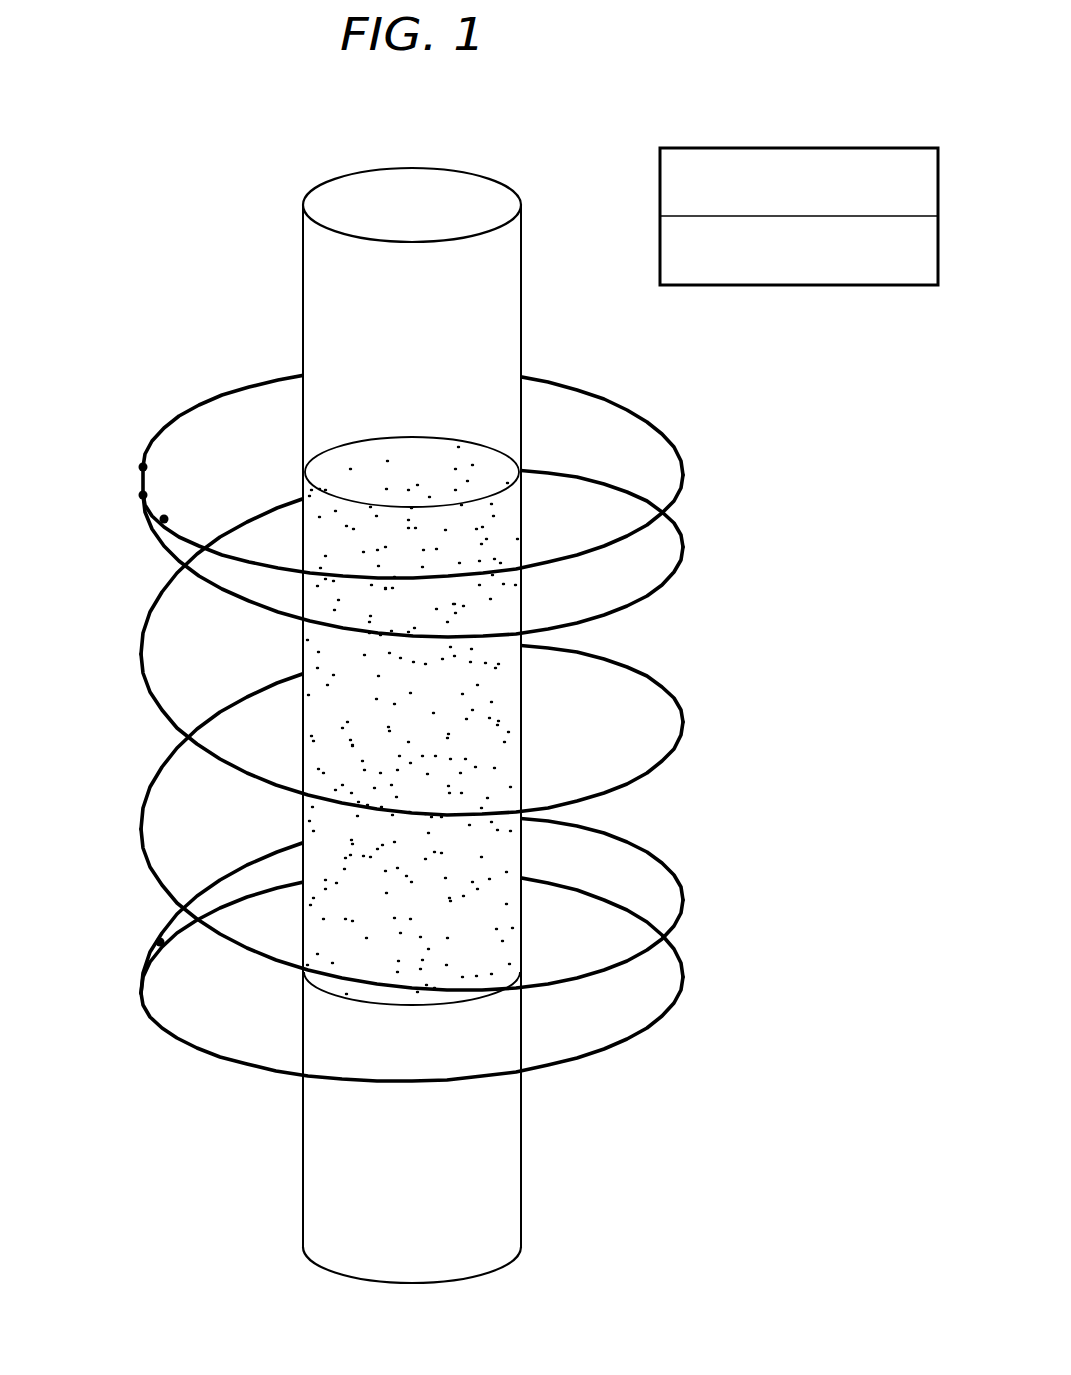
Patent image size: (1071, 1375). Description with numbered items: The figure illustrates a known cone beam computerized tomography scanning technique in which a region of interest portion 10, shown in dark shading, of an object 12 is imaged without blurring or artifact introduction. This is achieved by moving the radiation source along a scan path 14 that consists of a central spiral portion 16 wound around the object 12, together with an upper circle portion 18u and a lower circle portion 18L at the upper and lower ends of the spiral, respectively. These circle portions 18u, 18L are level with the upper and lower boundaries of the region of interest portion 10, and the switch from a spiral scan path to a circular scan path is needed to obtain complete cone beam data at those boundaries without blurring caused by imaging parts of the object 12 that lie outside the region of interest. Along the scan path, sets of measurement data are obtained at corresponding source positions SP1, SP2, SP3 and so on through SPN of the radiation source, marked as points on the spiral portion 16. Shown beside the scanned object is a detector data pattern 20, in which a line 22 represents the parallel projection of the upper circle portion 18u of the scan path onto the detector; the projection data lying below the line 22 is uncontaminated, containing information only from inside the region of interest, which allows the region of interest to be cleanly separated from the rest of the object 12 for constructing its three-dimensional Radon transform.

The region of interest portion 10 is at (522, 748).
The object 12 is at (522, 1148).
The scan path 14 is at (457, 724).
The spiral portion 16 is at (665, 758).
The upper circle portion 18u is at (623, 408).
The lower circle portion 18L is at (660, 1027).
The detector data pattern 20 is at (844, 122).
The line 22 is at (688, 215).
The source position SP1 is at (143, 467).
The source position SP2 is at (143, 495).
The source position SP3 is at (164, 519).
The source position SPN is at (160, 942).